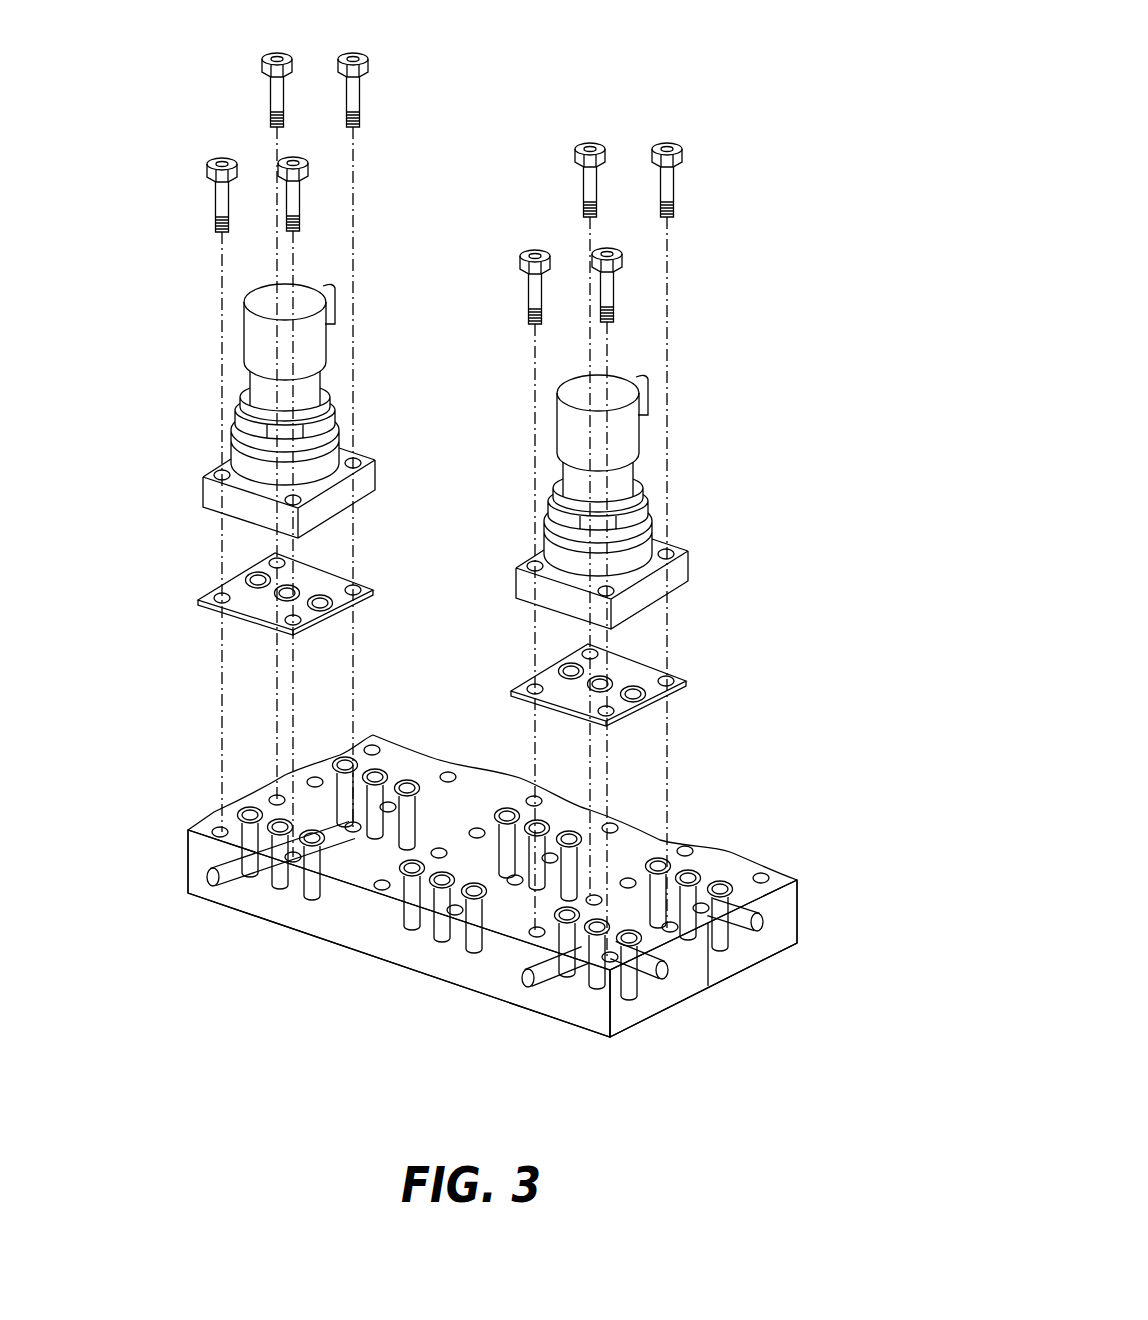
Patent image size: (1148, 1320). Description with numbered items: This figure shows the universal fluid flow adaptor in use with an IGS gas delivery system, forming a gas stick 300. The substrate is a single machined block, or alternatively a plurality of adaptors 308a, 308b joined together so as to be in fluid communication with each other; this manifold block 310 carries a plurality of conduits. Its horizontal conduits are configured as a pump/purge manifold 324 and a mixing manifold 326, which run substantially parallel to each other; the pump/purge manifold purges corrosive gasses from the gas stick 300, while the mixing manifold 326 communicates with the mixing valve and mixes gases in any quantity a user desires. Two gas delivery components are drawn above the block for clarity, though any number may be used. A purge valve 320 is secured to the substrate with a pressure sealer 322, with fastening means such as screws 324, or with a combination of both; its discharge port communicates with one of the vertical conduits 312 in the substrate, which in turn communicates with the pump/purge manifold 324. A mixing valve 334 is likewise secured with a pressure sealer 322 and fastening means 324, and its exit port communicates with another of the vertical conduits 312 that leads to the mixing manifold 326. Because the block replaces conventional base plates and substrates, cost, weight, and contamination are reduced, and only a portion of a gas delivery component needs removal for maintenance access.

The gas stick 300 is at (822, 725).
The adaptor 308a is at (647, 1003).
The adaptor 308b is at (763, 943).
The manifold block 310 is at (551, 898).
The vertical conduit 312 is at (312, 836).
The purge valve 320 is at (243, 345).
The pressure sealer 322 is at (237, 586).
The screws 324 is at (266, 56).
The mixing manifold 326 is at (545, 981).
The mixing valve 334 is at (630, 435).